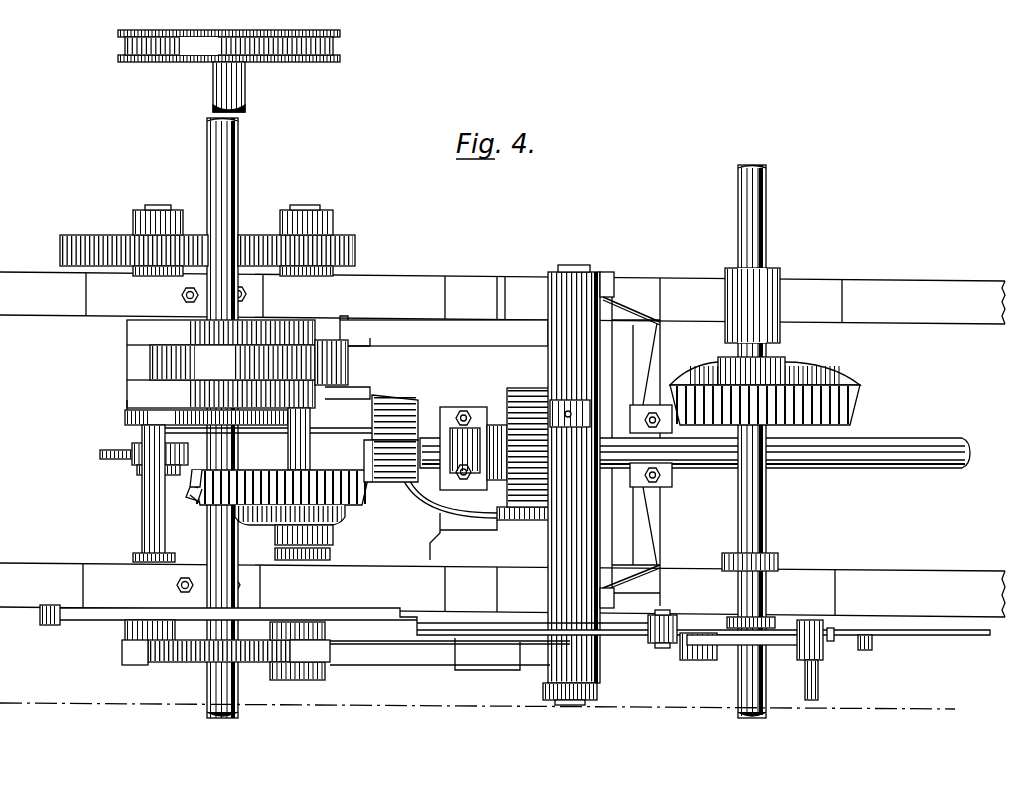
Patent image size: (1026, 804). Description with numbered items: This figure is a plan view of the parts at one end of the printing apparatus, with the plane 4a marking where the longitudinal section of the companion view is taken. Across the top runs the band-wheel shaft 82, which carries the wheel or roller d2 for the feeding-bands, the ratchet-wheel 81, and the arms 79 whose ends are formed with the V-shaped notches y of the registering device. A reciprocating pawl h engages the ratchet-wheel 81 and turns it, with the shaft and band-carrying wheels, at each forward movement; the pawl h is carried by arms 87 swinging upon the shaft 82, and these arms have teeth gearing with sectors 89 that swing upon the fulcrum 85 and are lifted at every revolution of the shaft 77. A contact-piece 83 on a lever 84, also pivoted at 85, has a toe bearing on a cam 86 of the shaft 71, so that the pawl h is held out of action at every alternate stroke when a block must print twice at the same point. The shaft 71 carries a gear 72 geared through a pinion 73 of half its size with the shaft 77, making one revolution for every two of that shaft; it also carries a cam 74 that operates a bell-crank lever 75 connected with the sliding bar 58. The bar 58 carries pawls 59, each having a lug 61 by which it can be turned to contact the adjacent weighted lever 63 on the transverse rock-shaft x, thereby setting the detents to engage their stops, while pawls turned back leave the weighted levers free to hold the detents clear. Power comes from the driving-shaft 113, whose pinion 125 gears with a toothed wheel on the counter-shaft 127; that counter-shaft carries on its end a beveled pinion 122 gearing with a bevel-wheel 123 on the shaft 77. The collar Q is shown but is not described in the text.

The wheel or roller d2 is at (340, 57).
The shaft 82 is at (240, 137).
The gear 72 is at (99, 238).
The pinion 73 is at (263, 238).
The shaft 77 is at (322, 212).
The arms 87 is at (221, 365).
The ratchet-wheel 81 is at (221, 362).
The sectors 89 is at (324, 327).
The collar Q is at (128, 411).
The pawl h is at (125, 418).
The cam 86 is at (101, 453).
The shaft 71 is at (141, 505).
The contact-piece 83 is at (270, 430).
The lever 84 is at (362, 432).
The beveled pinion 122 is at (398, 398).
The bevel-wheel 123 is at (398, 512).
The counter-shaft 127 is at (437, 420).
The pinion 125 is at (526, 395).
The fulcrum 85 is at (583, 490).
The driving-shaft 113 is at (917, 435).
The reciprocating bar 58 is at (98, 612).
The bell-crank lever 75 is at (48, 626).
The cam 74 is at (123, 626).
The arms 79 is at (185, 660).
The V-shaped notches y is at (125, 665).
The weighted lever 63 is at (790, 645).
The transverse rock-shaft x is at (813, 701).
The lug 61 is at (834, 632).
The pawls 59 is at (851, 640).
The plane 4a is at (493, 709).